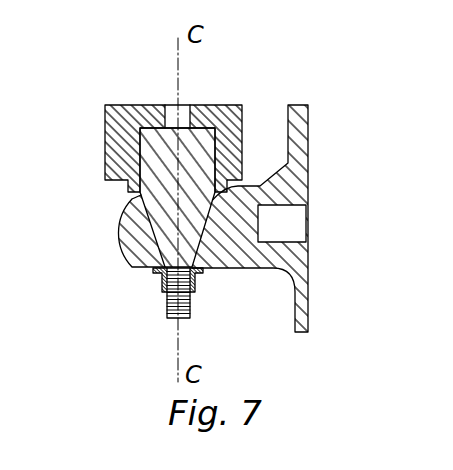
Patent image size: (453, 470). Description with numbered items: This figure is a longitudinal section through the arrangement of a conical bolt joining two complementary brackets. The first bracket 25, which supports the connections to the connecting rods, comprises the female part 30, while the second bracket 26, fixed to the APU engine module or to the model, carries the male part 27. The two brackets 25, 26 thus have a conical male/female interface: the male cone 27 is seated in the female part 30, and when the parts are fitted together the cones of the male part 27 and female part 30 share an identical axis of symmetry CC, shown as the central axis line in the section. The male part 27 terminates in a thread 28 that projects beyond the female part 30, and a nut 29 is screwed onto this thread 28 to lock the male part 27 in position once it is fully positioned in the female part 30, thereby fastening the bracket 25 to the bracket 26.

The first bracket 25 is at (288, 262).
The second bracket 26 is at (120, 121).
The male part 27 is at (205, 145).
The thread 28 is at (180, 303).
The nut 29 is at (165, 280).
The female part 30 is at (143, 235).